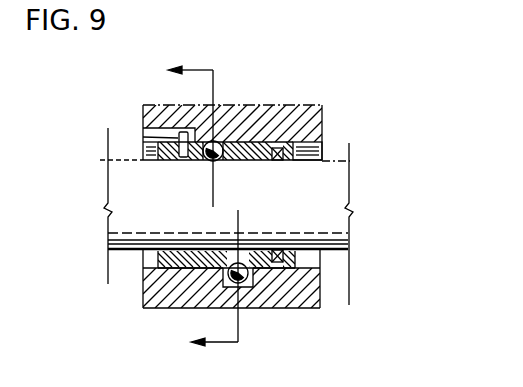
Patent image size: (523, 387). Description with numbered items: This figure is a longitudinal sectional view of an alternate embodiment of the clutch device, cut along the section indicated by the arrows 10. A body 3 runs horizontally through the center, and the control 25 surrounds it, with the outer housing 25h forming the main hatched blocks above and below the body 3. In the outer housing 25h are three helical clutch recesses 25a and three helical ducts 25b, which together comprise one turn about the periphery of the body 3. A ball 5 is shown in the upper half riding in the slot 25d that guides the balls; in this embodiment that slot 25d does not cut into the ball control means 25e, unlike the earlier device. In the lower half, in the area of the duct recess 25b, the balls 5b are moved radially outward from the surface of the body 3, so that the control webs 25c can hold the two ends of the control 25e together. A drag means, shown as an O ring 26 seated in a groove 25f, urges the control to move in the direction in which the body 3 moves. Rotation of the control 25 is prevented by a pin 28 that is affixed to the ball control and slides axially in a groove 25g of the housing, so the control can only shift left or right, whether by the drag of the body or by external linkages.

The body 3 is at (153, 207).
The ball 5 is at (209, 141).
The balls 5b is at (226, 280).
The section line 10 is at (190, 207).
The control 25 is at (322, 94).
The helical clutch recesses 25a is at (221, 140).
The helical ducts 25b is at (250, 283).
The control webs 25c is at (283, 272).
The slot 25d is at (227, 160).
The ball control means 25e is at (252, 148).
The groove 25f is at (295, 260).
The groove of the housing 25g is at (157, 128).
The outer housing 25h is at (307, 126).
The O ring 26 is at (279, 161).
The pin 28 is at (143, 137).